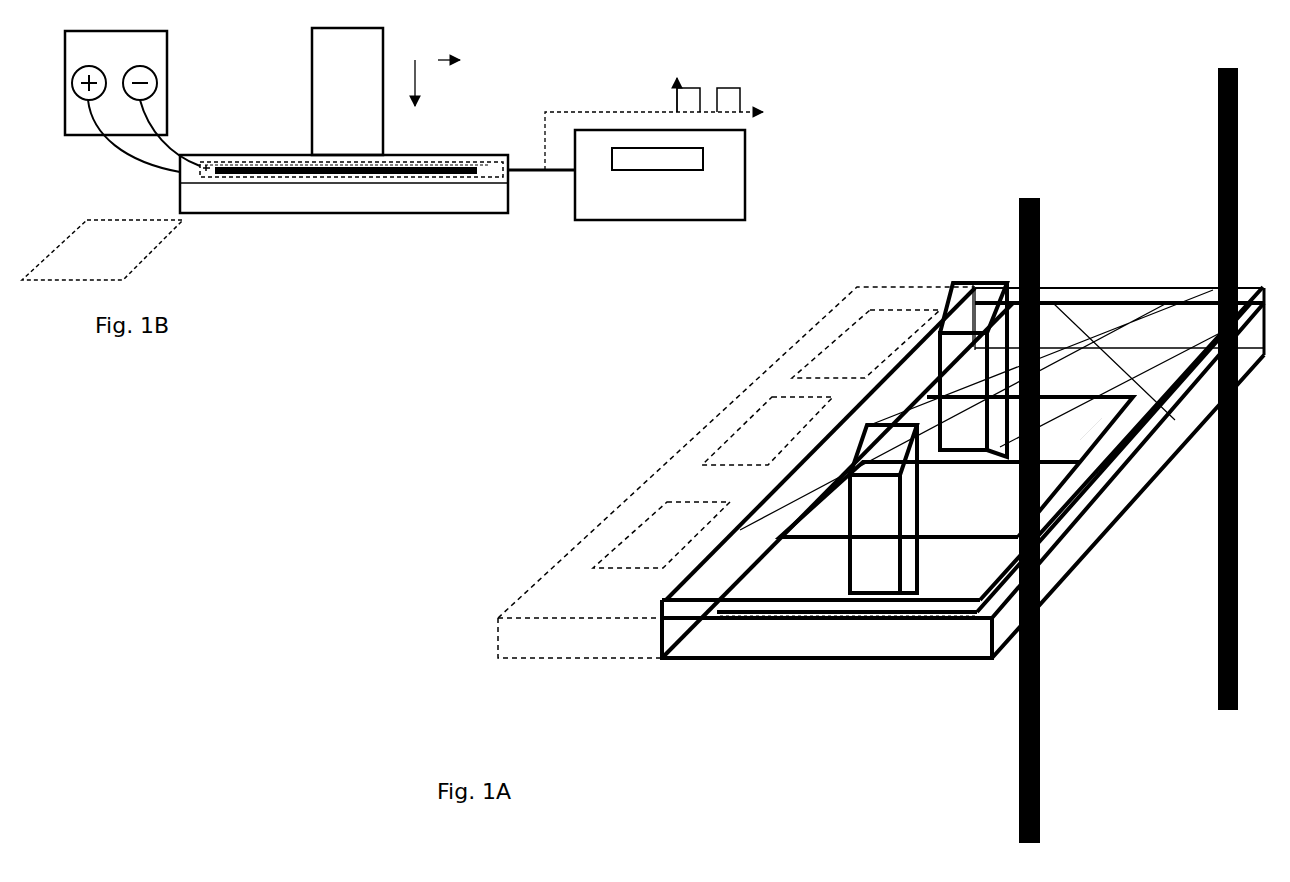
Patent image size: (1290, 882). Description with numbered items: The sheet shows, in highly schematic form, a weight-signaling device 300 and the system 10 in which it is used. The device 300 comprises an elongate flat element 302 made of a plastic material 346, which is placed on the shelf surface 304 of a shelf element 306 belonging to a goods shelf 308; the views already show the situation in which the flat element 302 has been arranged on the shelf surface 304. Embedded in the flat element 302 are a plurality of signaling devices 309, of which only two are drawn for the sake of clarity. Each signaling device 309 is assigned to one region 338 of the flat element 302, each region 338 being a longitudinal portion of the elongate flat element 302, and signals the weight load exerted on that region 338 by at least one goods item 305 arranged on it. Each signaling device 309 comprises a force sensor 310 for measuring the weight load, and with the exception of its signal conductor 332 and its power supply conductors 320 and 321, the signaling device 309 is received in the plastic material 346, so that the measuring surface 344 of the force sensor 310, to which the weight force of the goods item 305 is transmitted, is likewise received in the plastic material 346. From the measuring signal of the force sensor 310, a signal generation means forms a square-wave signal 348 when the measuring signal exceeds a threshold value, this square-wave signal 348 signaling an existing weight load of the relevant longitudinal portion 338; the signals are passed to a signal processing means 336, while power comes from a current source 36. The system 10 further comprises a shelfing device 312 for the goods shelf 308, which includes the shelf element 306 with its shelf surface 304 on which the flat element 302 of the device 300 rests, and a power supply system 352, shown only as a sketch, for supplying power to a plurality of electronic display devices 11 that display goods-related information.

In FIG. 1A, the system 10 is at (893, 252).
In FIG. 1A, the electronic display devices 11 is at (847, 347).
In FIG. 1B, the current source 36 is at (158, 55).
In FIG. 1B, the device 300 is at (513, 122).
In FIG. 1A, the device 300 is at (790, 577).
In FIG. 1B, the flat element 302 is at (182, 178).
In FIG. 1A, the flat element 302 is at (1053, 540).
In FIG. 1B, the shelf surface 304 is at (485, 180).
In FIG. 1A, the shelf surface 304 is at (660, 612).
In FIG. 1B, the goods item 305 is at (373, 53).
In FIG. 1A, the goods item 305 is at (745, 532).
In FIG. 1B, the shelf element 306 is at (433, 203).
In FIG. 1A, the shelf element 306 is at (757, 648).
In FIG. 1A, the goods shelf 308 is at (1043, 766).
In FIG. 1B, the signaling device 309 is at (210, 175).
In FIG. 1A, the signaling device 309 is at (1103, 416).
In FIG. 1B, the force sensor 310 is at (337, 173).
In FIG. 1A, the force sensor 310 is at (807, 620).
In FIG. 1A, the shelfing device 312 is at (934, 668).
In FIG. 1B, the power supply conductor 320 is at (170, 143).
In FIG. 1B, the power supply conductor 321 is at (122, 161).
In FIG. 1B, the signal conductor 332 is at (522, 172).
In FIG. 1B, the signal processing means 336 is at (733, 197).
In FIG. 1A, the region 338 is at (1083, 420).
In FIG. 1B, the measuring surface 344 is at (458, 168).
In FIG. 1A, the measuring surface 344 is at (723, 618).
In FIG. 1A, the plastic material 346 is at (885, 648).
In FIG. 1B, the square-wave signal 348 is at (737, 88).
In FIG. 1A, the power supply system 352 is at (560, 647).